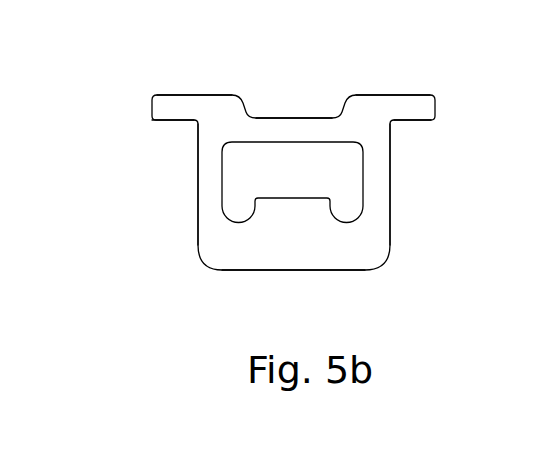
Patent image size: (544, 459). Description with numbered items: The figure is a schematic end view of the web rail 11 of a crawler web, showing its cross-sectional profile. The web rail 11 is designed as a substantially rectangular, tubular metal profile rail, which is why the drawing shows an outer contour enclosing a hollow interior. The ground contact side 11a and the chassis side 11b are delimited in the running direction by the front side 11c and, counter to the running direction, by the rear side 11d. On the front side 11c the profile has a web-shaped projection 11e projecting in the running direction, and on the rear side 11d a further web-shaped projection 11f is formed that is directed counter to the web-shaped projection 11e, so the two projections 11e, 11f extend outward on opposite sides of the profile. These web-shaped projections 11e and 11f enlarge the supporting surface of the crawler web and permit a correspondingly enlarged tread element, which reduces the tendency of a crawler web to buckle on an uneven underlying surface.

The web rail 11 is at (190, 233).
The ground contact side 11a is at (306, 272).
The chassis side 11b is at (292, 117).
The front side 11c is at (196, 186).
The rear side 11d is at (391, 185).
The web-shaped projection 11e is at (170, 116).
The further web-shaped projection 11f is at (421, 121).